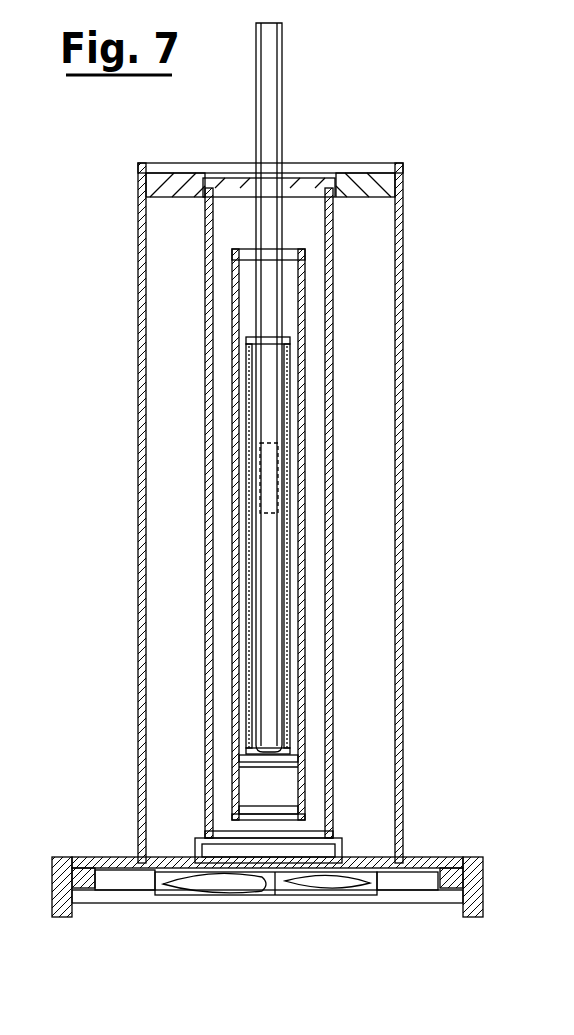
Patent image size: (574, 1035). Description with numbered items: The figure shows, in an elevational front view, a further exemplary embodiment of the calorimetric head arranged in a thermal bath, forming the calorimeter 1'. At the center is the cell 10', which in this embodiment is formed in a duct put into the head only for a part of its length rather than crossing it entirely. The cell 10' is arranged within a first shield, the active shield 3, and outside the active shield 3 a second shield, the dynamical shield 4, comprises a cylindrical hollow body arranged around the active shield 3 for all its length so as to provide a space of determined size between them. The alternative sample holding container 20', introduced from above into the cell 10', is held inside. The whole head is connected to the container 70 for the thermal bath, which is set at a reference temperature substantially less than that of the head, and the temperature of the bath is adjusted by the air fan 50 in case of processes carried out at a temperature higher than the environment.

The calorimeter 1' is at (480, 716).
The active shield 3 is at (306, 310).
The dynamical shield 4 is at (333, 527).
The cell 10' is at (322, 387).
The sample holding container 20' is at (378, 545).
The air fan 50 is at (190, 918).
The container 70 is at (138, 312).